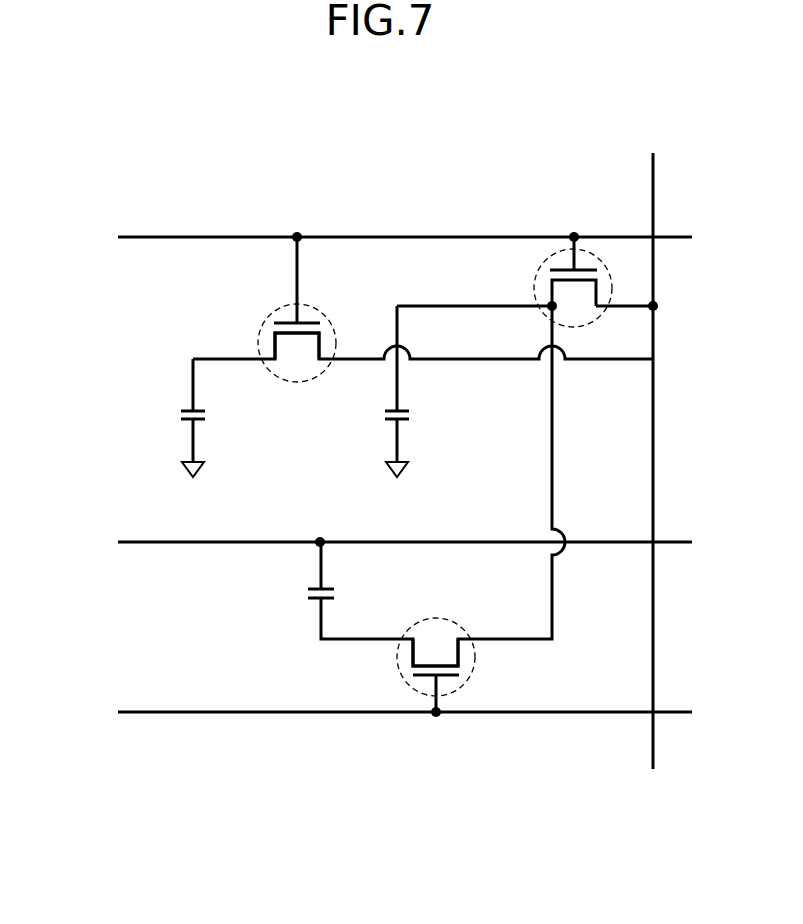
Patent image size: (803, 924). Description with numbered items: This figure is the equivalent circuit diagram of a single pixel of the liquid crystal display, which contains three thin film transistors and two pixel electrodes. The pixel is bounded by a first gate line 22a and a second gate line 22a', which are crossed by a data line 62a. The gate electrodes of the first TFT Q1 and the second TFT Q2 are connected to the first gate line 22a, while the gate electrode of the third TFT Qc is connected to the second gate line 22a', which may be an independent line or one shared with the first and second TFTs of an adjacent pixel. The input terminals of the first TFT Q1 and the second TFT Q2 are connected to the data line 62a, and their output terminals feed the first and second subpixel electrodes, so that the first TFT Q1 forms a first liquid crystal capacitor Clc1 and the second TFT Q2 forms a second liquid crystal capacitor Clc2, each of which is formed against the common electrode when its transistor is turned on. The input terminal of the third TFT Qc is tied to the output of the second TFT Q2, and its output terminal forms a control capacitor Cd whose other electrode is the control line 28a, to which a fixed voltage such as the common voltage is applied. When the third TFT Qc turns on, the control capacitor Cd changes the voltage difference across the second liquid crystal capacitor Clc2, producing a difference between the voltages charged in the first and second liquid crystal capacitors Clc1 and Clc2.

The first gate line 22a is at (382, 237).
The control line 28a is at (382, 542).
The second gate line 22a' is at (382, 710).
The data line 62a is at (653, 448).
The first TFT Q1 is at (272, 313).
The second TFT Q2 is at (540, 270).
The third TFT Qc is at (465, 683).
The first liquid crystal capacitor Clc1 is at (166, 418).
The second liquid crystal capacitor Clc2 is at (371, 391).
The control capacitor Cd is at (337, 574).